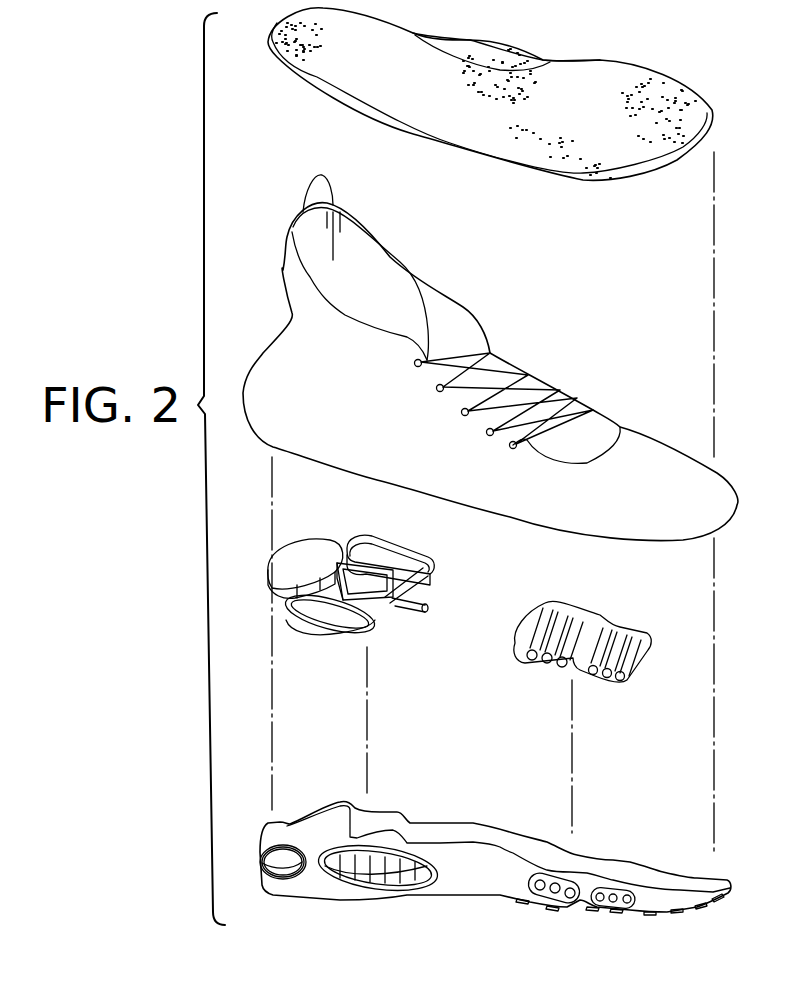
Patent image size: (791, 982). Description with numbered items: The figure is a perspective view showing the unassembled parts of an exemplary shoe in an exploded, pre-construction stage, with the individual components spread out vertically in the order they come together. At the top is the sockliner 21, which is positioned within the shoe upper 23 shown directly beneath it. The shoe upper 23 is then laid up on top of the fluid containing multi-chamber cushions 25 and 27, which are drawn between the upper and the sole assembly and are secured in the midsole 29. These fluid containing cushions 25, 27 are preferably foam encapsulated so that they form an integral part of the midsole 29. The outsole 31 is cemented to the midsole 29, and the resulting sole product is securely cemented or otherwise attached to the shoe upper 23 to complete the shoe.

The sockliner 21 is at (623, 67).
The shoe upper 23 is at (635, 438).
The fluid containing multi-chamber cushion 25 is at (360, 540).
The fluid containing multi-chamber cushion 27 is at (600, 615).
The midsole 29 is at (448, 873).
The outsole 31 is at (310, 903).